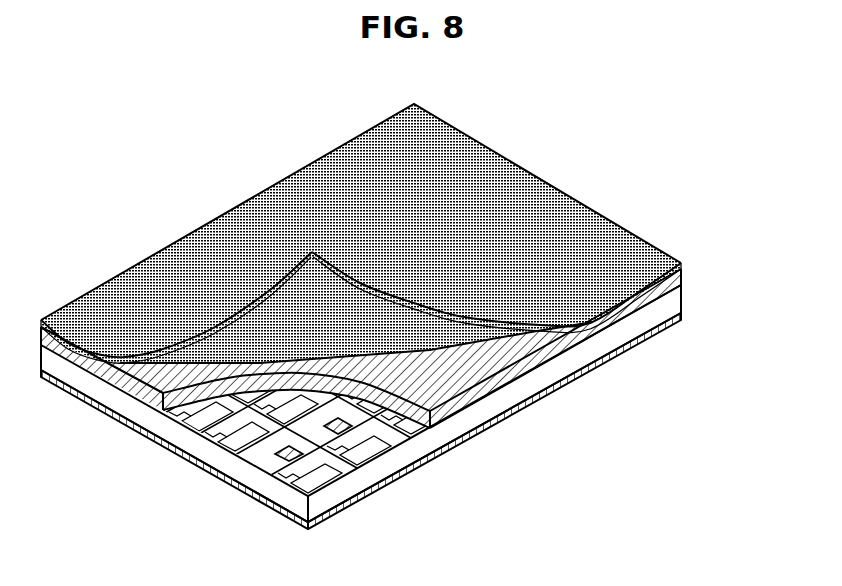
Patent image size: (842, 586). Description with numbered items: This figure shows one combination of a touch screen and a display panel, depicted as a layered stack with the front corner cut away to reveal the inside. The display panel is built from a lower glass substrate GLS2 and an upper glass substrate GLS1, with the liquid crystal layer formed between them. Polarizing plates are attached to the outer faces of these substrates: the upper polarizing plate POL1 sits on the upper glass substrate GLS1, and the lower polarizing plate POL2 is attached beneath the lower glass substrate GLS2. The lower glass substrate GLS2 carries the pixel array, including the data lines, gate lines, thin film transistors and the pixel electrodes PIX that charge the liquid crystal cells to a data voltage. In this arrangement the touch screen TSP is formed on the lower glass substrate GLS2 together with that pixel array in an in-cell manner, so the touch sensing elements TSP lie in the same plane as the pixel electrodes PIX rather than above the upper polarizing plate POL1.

The upper polarizing plate POL1 is at (683, 264).
The upper glass substrate GLS1 is at (675, 281).
The lower glass substrate GLS2 is at (675, 300).
The lower polarizing plate POL2 is at (683, 320).
The touch screen TSP is at (270, 460).
The pixel electrode PIX is at (303, 489).